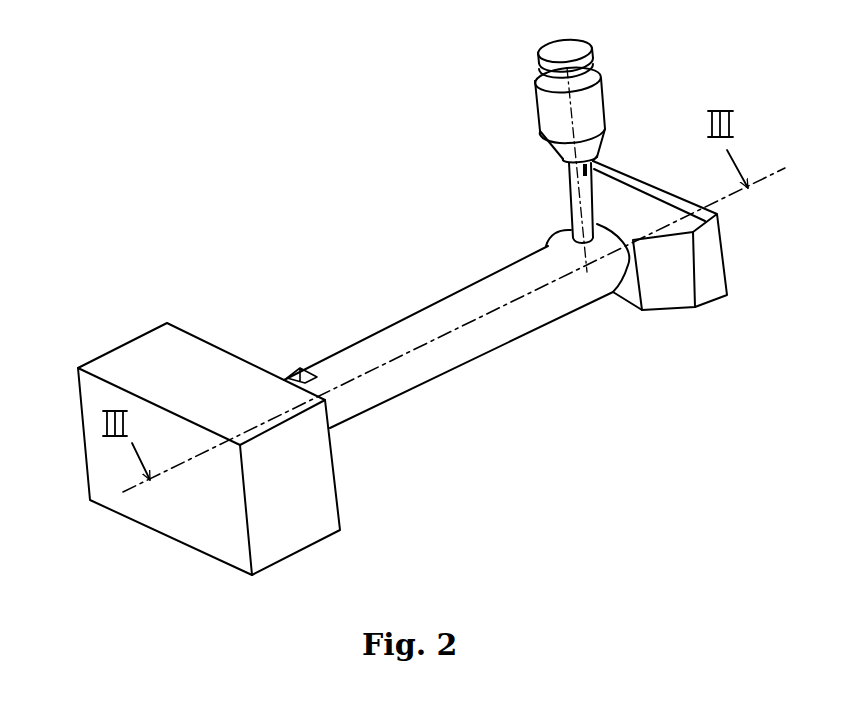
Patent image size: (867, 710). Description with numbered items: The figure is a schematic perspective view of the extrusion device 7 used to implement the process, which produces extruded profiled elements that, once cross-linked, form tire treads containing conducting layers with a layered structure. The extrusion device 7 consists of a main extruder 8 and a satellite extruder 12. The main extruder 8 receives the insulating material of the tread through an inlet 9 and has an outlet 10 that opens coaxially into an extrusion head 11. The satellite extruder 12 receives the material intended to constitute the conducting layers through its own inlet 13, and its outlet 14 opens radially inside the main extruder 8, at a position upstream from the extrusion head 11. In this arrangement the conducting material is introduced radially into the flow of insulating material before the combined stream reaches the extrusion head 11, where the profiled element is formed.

The extrusion device 7 is at (347, 233).
The main extruder 8 is at (413, 392).
The inlet 9 is at (293, 374).
The outlet 10 is at (600, 300).
The extrusion head 11 is at (678, 292).
The satellite extruder 12 is at (608, 110).
The inlet 13 is at (588, 165).
The outlet 14 is at (543, 246).